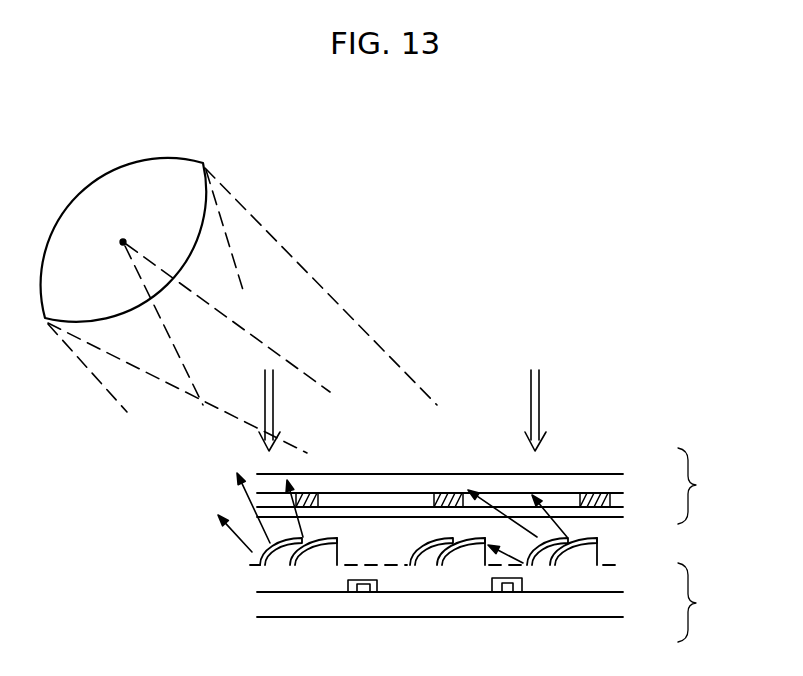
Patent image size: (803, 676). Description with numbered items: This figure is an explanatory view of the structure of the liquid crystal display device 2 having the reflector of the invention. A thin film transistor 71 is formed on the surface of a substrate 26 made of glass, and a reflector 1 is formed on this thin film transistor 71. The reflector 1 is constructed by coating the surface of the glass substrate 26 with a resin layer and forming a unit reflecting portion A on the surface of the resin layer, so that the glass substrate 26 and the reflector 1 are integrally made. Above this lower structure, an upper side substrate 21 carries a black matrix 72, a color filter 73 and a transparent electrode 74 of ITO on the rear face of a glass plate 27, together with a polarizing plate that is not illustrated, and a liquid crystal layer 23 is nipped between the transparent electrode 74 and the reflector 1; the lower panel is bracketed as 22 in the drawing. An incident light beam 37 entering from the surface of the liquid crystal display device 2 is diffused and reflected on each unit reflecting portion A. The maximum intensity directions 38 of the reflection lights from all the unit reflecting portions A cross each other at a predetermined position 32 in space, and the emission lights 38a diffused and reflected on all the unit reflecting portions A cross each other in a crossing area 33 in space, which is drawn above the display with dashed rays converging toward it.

The crossing area 33 is at (148, 159).
The predetermined position 32 is at (123, 242).
The incident light beam 37 is at (274, 400).
The liquid crystal display device 2 is at (610, 432).
The maximum intensity directions 38 is at (248, 497).
The emission lights 38a is at (303, 533).
The upper side substrate 21 is at (705, 486).
The glass plate 27 is at (618, 485).
The color filter 73 is at (393, 503).
The black matrix 72 is at (457, 493).
The transparent electrode 74 is at (622, 511).
The liquid crystal layer 23 is at (617, 540).
The lower panel 22 is at (705, 602).
The reflector 1 is at (620, 578).
The substrate 26 is at (618, 605).
The thin film transistor 71 is at (502, 593).
The unit reflecting portion A is at (283, 557).